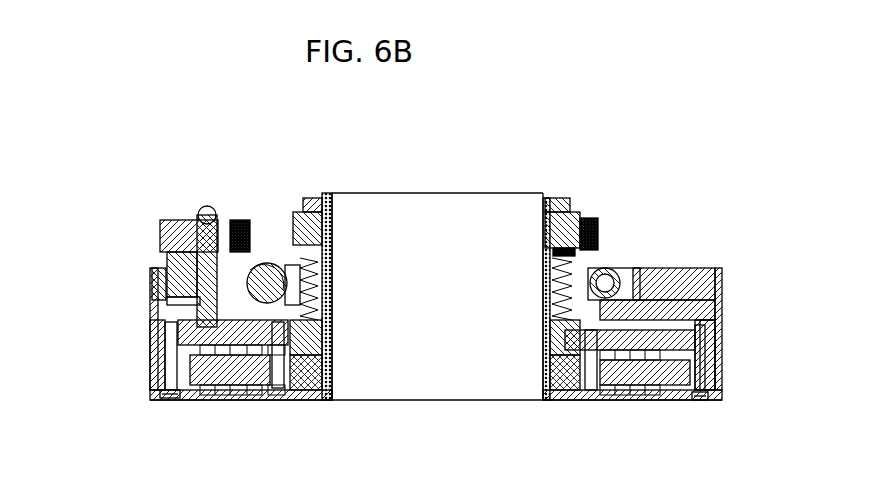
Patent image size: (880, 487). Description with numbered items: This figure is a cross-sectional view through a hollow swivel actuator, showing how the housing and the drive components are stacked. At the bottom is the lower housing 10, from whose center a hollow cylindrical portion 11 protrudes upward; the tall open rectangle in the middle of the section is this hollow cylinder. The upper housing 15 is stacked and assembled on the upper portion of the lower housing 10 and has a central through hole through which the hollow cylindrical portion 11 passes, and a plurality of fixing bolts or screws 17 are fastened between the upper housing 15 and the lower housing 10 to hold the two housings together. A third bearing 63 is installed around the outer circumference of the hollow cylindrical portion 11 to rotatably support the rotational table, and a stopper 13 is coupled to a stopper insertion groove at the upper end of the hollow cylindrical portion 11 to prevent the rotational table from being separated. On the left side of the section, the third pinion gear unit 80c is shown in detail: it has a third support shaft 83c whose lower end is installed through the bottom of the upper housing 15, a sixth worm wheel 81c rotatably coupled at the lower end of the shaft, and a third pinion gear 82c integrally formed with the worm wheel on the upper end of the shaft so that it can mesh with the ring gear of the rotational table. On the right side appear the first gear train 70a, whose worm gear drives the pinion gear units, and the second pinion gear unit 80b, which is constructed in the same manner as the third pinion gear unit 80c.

The hollow cylindrical portion 11 is at (345, 230).
The stopper 13 is at (555, 200).
The third bearing 63 is at (586, 215).
The second pinion gear unit 80b is at (606, 212).
The first gear train 70a is at (633, 265).
The third support shaft 83c is at (205, 215).
The third pinion gear 82c is at (162, 232).
The sixth worm wheel 81c is at (152, 268).
The third pinion gear unit 80c is at (70, 195).
The upper housing 15 is at (718, 322).
The lower housing 10 is at (718, 368).
The fixing bolts or screws 17 is at (700, 402).